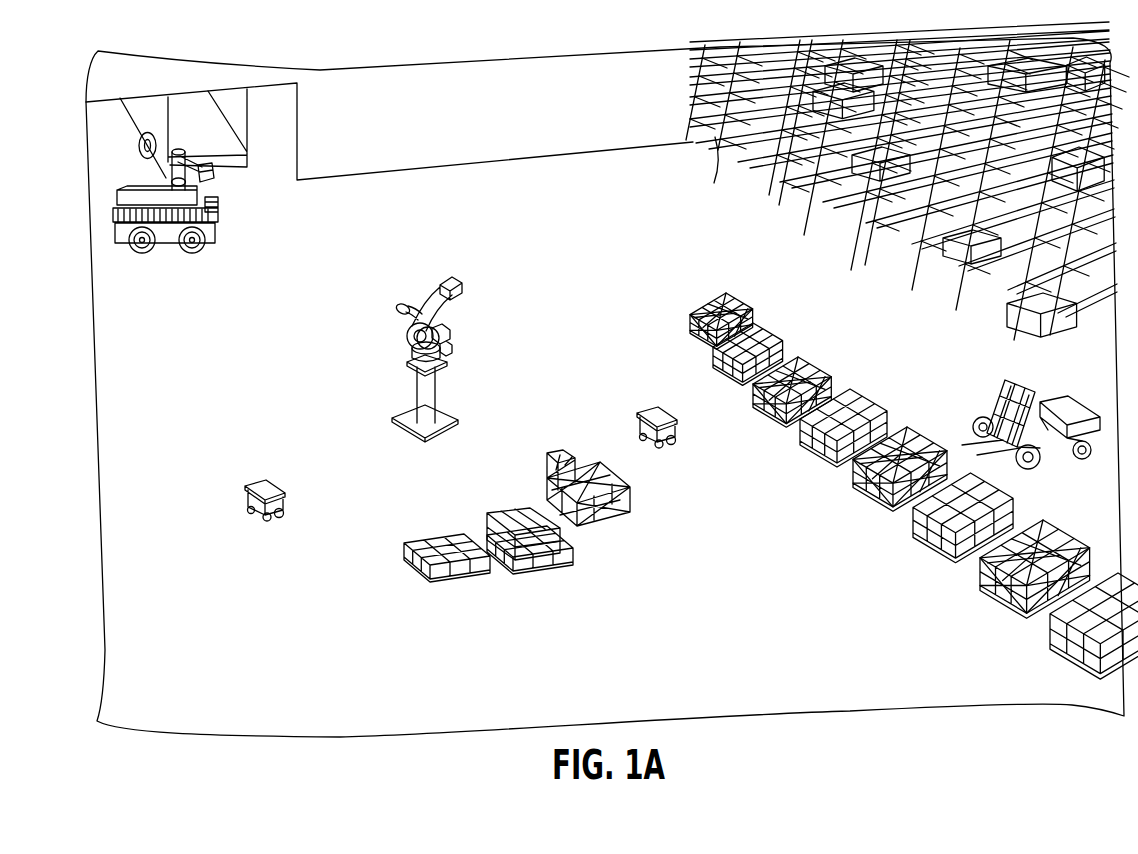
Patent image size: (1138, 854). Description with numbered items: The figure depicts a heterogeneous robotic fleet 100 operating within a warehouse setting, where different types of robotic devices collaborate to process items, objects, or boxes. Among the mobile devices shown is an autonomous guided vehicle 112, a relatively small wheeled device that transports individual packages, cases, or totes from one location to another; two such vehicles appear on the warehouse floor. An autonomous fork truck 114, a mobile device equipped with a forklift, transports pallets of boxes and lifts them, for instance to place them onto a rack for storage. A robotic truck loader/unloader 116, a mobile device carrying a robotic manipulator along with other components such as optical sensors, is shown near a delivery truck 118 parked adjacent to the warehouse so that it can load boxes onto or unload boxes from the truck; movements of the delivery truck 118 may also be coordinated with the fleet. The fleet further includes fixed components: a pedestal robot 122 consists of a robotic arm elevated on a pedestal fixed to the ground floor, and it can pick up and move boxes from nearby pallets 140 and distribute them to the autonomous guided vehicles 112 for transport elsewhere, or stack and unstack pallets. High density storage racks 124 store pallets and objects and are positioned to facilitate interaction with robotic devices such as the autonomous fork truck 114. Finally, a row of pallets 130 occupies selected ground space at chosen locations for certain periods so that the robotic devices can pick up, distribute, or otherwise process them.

The robotic fleet 100 is at (458, 102).
The autonomous guided vehicle (AGV) 112 is at (262, 488).
The autonomous fork truck 114 is at (1067, 407).
The robotic truck loader/unloader 116 is at (213, 232).
The delivery truck 118 is at (148, 117).
The pedestal robot 122 is at (437, 290).
The high density storage racks 124 is at (790, 173).
The pallets 130 is at (770, 335).
The pallets 140 is at (610, 522).